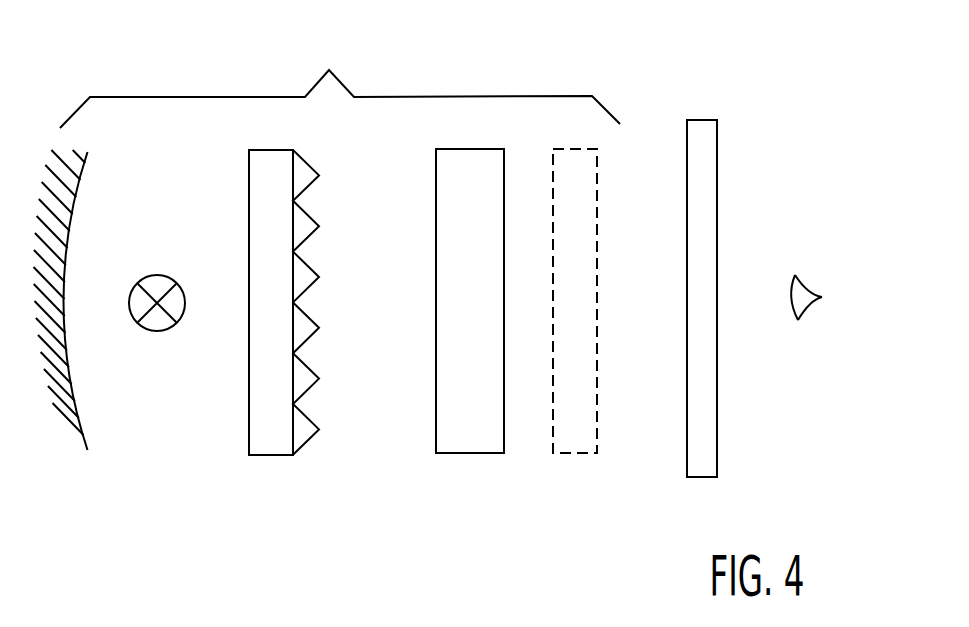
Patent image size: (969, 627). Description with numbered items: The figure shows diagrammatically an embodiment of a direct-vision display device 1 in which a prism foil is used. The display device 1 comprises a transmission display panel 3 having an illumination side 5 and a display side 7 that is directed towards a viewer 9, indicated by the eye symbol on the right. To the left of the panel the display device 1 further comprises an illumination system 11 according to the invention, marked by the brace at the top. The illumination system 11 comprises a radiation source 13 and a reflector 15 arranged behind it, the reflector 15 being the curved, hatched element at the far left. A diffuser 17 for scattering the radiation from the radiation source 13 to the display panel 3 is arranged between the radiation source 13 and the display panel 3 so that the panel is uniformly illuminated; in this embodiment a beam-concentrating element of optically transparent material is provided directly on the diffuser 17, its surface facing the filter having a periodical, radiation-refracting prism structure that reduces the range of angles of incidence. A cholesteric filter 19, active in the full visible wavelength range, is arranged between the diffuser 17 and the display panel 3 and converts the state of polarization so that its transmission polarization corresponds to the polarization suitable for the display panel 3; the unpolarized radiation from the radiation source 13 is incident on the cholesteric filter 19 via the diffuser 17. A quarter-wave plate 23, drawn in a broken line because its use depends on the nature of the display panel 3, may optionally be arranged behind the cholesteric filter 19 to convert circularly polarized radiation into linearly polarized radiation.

The direct-vision display device 1 is at (423, 560).
The transmission display panel 3 is at (707, 478).
The illumination side 5 is at (688, 447).
The display side 7 is at (716, 446).
The viewer 9 is at (808, 364).
The illumination system 11 is at (268, 60).
The radiation source 13 is at (163, 332).
The reflector 15 is at (85, 447).
The diffuser 17 is at (275, 455).
The cholesteric filter 19 is at (470, 453).
The λ/4 plate 23 is at (577, 455).